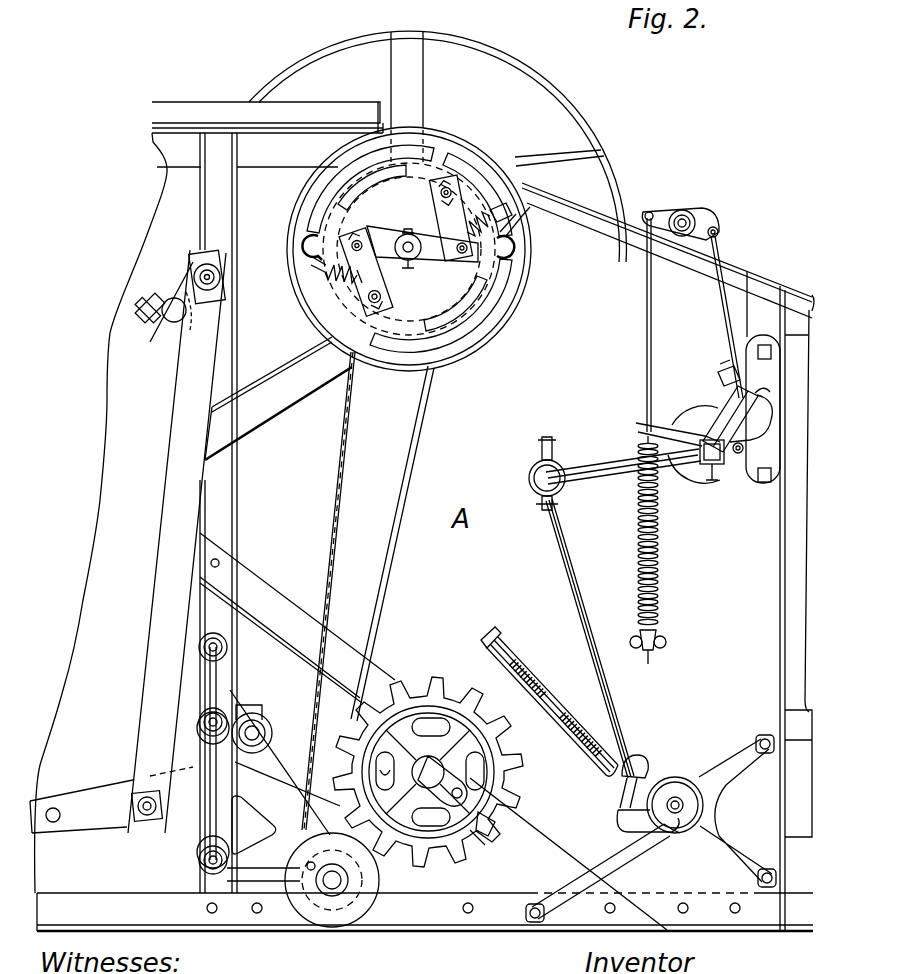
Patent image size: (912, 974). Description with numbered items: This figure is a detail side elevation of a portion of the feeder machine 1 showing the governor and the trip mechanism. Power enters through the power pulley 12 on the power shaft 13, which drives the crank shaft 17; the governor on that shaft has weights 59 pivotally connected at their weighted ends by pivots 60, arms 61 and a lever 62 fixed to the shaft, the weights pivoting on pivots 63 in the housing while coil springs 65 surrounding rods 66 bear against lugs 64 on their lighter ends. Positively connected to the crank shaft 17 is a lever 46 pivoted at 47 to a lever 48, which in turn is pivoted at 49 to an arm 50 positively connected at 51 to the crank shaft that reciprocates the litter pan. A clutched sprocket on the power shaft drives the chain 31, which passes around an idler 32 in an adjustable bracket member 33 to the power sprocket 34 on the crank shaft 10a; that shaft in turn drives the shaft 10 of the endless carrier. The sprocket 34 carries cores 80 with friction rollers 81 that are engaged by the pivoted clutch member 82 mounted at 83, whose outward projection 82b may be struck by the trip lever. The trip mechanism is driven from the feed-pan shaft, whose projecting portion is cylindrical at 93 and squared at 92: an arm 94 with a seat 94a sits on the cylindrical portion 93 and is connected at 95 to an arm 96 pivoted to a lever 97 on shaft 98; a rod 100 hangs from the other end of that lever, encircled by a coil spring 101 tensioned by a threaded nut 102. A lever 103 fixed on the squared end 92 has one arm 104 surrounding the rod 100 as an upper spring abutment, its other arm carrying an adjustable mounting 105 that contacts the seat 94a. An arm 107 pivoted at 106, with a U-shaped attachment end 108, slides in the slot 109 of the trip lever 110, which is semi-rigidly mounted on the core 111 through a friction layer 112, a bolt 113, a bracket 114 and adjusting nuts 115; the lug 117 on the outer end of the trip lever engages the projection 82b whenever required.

The machine body 1 is at (107, 408).
The shaft 10 is at (255, 730).
The crank shaft 10a is at (430, 770).
The power pulley 12 is at (576, 108).
The power shaft 13 is at (408, 256).
The crank shaft 17 is at (173, 326).
The chain 31 is at (418, 458).
The idler 32 is at (326, 915).
The adjustable bracket member 33 is at (247, 871).
The power sprocket 34 is at (477, 700).
The lever 46 is at (177, 297).
The pivotal connection 47 is at (217, 293).
The lever 48 is at (170, 488).
The pivotal connection 49 is at (147, 822).
The arm 50 is at (90, 805).
The positive connection 51 is at (53, 823).
The weights 59 is at (397, 163).
The pivots 60 is at (447, 190).
The arms 61 is at (467, 193).
The lever 62 is at (455, 345).
The pivots 63 is at (310, 240).
The lugs 64 is at (300, 266).
The coil springs 65 is at (505, 212).
The rods 66 is at (525, 186).
The core 80 is at (383, 777).
The friction rollers 81 is at (482, 767).
The clutch member 82 is at (493, 825).
The outwardly projecting member 82b is at (487, 840).
The pivotal mounting 83 is at (440, 787).
The squared end 92 is at (720, 490).
The cylindrical portion 93 is at (735, 488).
The arm 94 is at (605, 463).
The seat 94a is at (750, 400).
The connection 95 is at (743, 450).
The arm 96 is at (727, 263).
The lever 97 is at (703, 217).
The shaft 98 is at (683, 212).
The rod 100 is at (645, 312).
The coil spring 101 is at (657, 530).
The threaded nut 102 is at (654, 645).
The lever 103 is at (722, 412).
The arm 104 is at (657, 427).
The adjustable mounting 105 is at (723, 378).
The pivotal connection 106 is at (553, 460).
The arm 107 is at (563, 567).
The U-shaped attachment end 108 is at (630, 754).
The slot 109 is at (634, 790).
The trip lever 110 is at (540, 690).
The core 111 is at (700, 782).
The friction layer 112 is at (678, 800).
The bolt 113 is at (680, 800).
The bracket 114 is at (622, 806).
The adjusting nuts 115 is at (675, 815).
The lug 117 is at (507, 648).